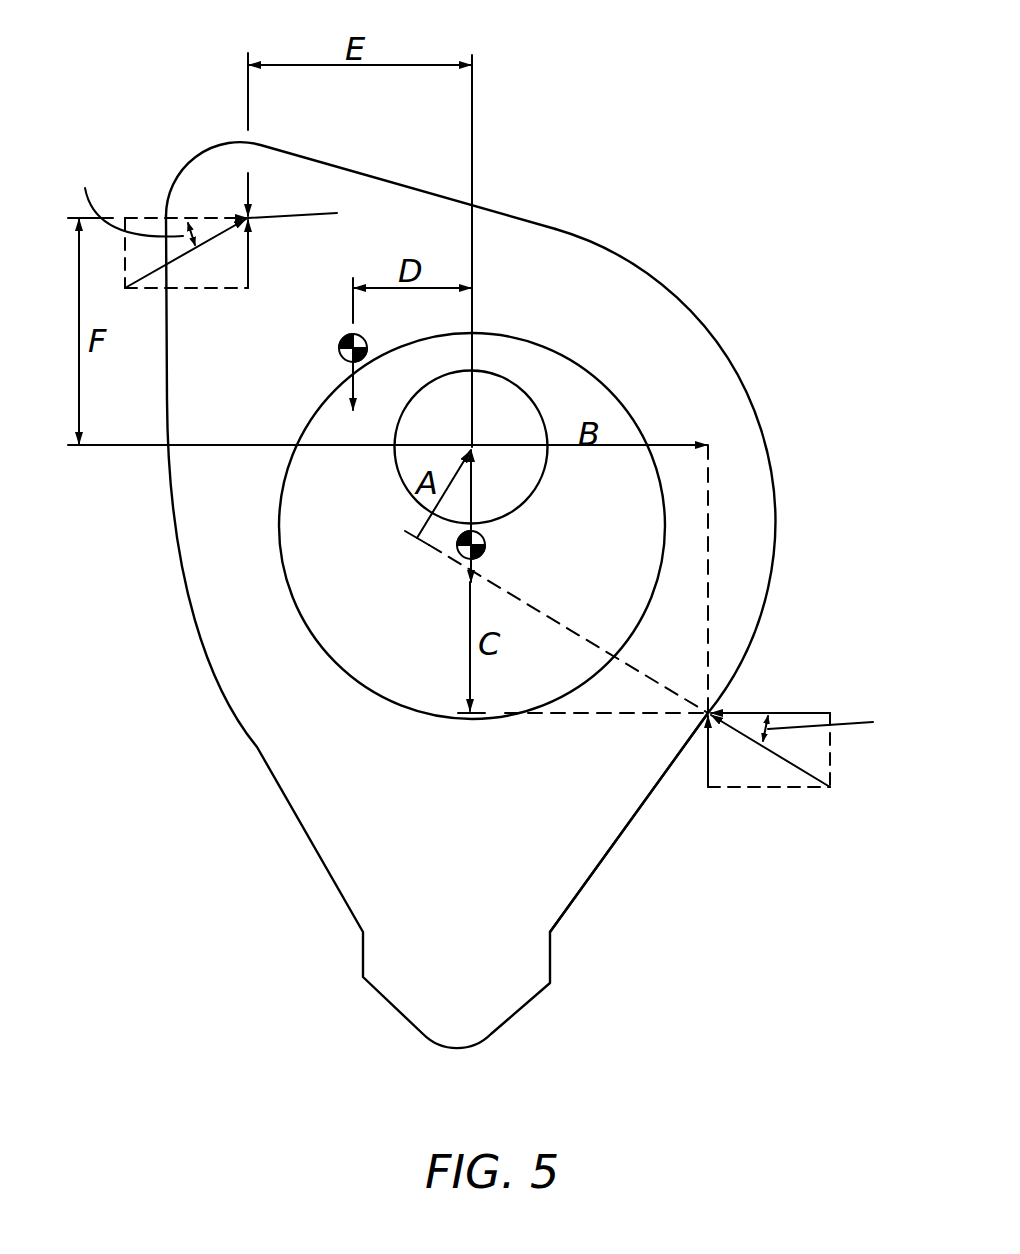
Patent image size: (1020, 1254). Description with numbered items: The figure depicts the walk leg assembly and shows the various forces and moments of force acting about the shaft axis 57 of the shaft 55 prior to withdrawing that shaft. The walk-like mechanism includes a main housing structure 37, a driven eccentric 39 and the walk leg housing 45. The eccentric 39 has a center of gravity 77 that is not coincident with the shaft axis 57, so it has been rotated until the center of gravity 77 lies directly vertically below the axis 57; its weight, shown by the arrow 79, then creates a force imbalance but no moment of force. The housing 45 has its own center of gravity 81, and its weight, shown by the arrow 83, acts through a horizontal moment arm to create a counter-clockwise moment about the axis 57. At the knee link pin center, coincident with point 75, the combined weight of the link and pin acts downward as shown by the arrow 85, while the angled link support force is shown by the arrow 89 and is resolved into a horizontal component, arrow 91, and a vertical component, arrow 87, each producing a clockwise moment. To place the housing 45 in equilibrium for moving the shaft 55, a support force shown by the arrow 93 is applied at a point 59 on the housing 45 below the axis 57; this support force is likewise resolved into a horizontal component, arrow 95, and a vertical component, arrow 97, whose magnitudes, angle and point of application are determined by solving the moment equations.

The main housing structure 37 is at (228, 773).
The driven eccentric 39 is at (307, 582).
The walk leg housing 45 is at (670, 290).
The shaft 55 is at (499, 395).
The shaft axis 57 is at (479, 442).
The point of application of support force 59 is at (710, 711).
The point coincident with pin center axis 75 is at (250, 247).
The center of gravity of eccentric 77 is at (486, 542).
The arrow representing force F1 79 is at (468, 582).
The center of gravity of housing 81 is at (340, 355).
The arrow representing force F2 83 is at (345, 390).
The arrow representing force F3 85 is at (250, 172).
The arrow representing force F5 87 is at (243, 266).
The arrow representing force F4 89 is at (190, 247).
The arrow representing force F6 91 is at (200, 216).
The arrow representing support force F7 93 is at (795, 770).
The arrow representing force F8 95 is at (760, 712).
The arrow representing force F9 97 is at (707, 760).